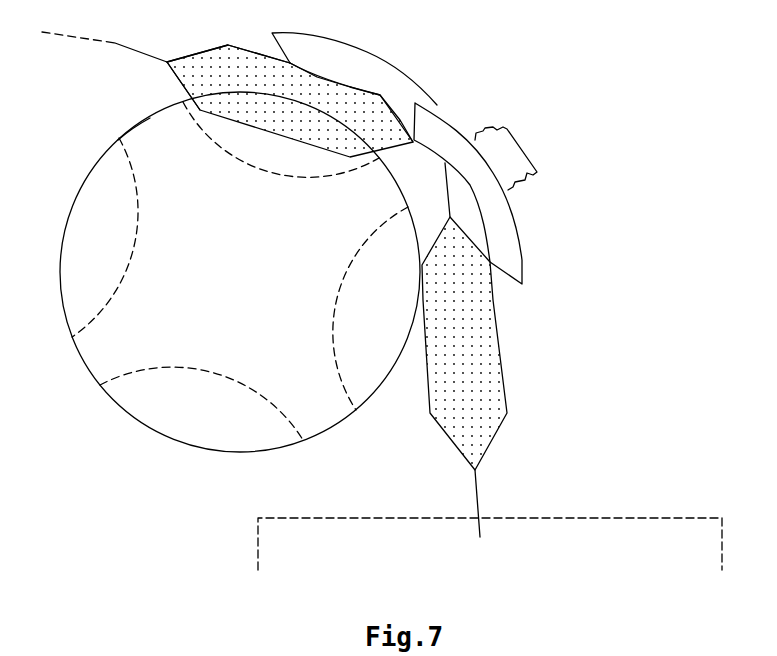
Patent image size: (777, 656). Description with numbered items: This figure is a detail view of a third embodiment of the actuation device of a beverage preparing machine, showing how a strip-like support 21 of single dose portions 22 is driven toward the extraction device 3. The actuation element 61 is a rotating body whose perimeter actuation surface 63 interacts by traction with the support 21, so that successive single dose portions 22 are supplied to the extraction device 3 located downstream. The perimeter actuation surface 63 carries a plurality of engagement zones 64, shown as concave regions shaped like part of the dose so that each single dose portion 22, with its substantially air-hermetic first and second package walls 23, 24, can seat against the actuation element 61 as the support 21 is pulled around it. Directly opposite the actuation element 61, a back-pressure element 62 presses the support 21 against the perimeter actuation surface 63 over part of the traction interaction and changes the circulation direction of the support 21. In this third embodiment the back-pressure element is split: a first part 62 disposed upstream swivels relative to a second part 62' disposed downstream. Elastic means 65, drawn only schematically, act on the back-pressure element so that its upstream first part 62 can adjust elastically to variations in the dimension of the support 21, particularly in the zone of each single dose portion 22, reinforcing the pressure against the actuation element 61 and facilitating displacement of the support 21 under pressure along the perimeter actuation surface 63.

The extraction device 3 is at (490, 544).
The support of single portions 21 is at (78, 29).
The single dose portion 22 is at (329, 283).
The first package wall 23 is at (177, 86).
The second package wall 24 is at (228, 44).
The actuation element 61 is at (240, 272).
The back-pressure element 62 is at (361, 87).
The back-pressure element 62' is at (489, 193).
The perimeter actuation surface 63 is at (128, 125).
The engagement zone 64 is at (128, 200).
The elastic means 65 is at (514, 158).